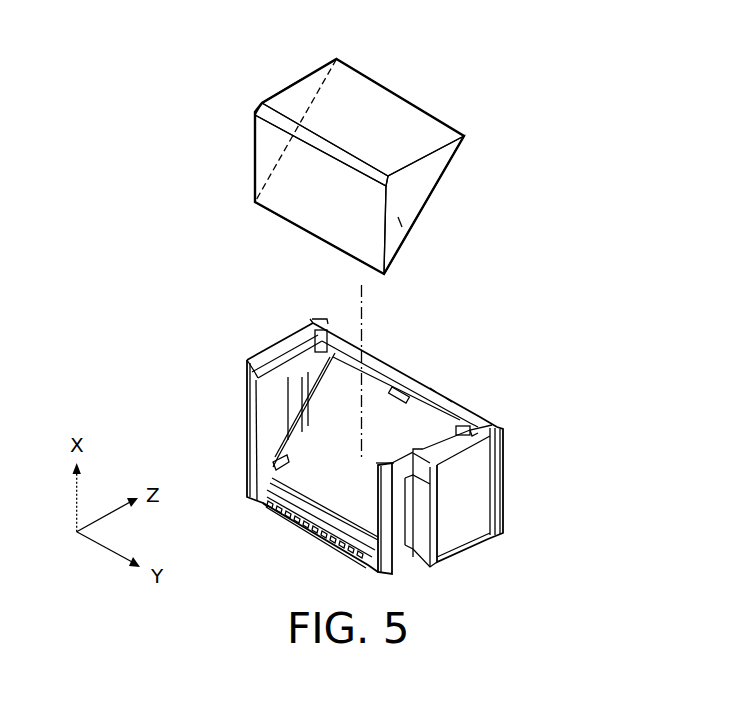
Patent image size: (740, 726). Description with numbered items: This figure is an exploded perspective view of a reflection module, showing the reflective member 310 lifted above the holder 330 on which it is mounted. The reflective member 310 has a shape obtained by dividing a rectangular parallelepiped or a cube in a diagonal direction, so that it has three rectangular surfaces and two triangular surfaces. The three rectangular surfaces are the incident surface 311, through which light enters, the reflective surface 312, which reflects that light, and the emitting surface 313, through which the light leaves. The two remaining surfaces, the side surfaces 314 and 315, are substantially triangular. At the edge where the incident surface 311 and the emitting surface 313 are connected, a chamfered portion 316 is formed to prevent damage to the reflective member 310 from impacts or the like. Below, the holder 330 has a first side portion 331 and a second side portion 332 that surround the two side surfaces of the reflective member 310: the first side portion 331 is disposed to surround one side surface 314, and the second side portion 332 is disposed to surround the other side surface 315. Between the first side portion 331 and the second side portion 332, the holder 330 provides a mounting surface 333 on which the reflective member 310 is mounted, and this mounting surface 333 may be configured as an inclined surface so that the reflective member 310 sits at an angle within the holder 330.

The reflective member 310 is at (366, 148).
The incident surface 311 is at (390, 110).
The reflective surface 312 is at (413, 240).
The emitting surface 313 is at (320, 207).
The side surface 314 is at (271, 88).
The side surface 315 is at (428, 175).
The chamfered portion 316 is at (280, 118).
The holder 330 is at (421, 431).
The first side portion 331 is at (270, 400).
The second side portion 332 is at (460, 430).
The mounting surface 333 is at (427, 432).